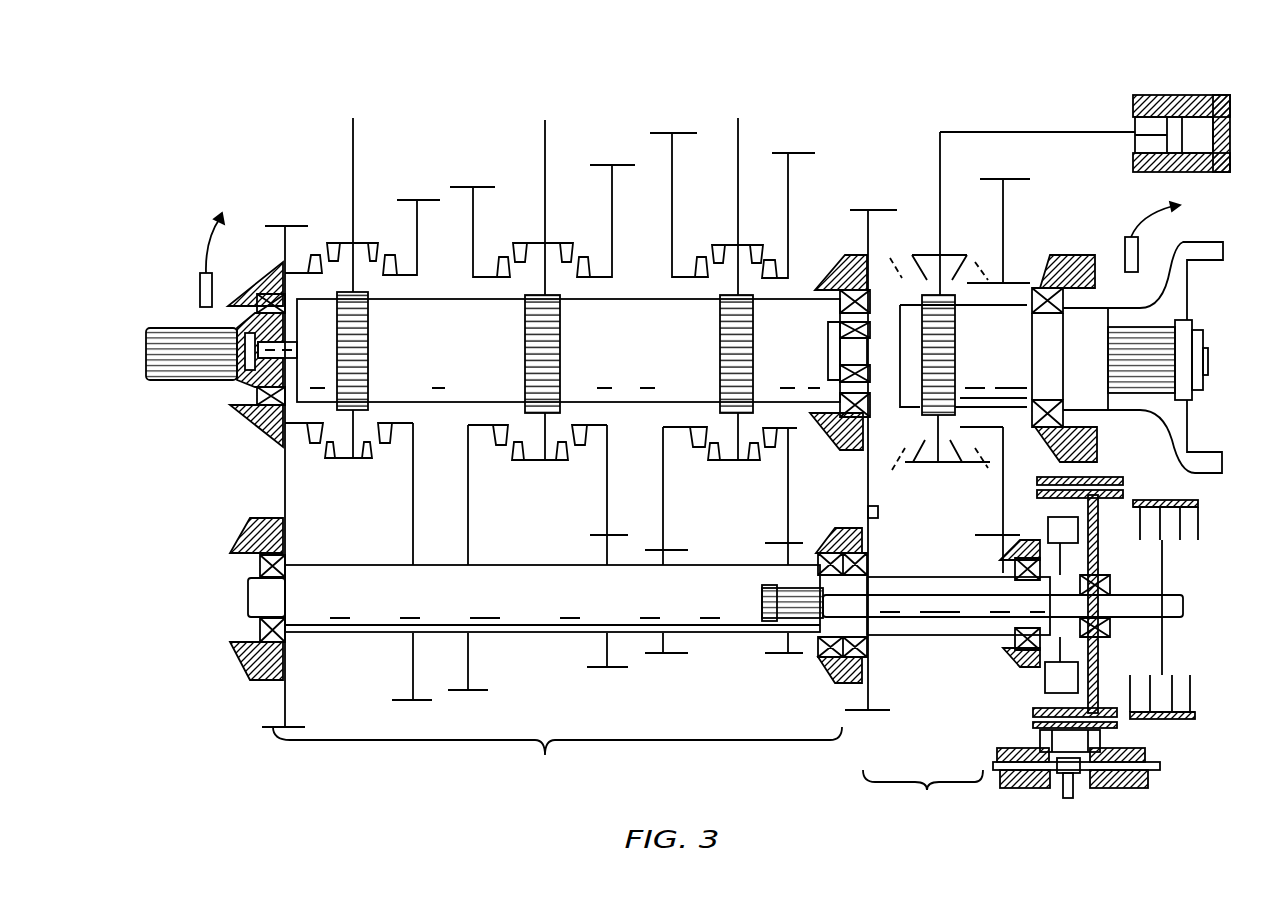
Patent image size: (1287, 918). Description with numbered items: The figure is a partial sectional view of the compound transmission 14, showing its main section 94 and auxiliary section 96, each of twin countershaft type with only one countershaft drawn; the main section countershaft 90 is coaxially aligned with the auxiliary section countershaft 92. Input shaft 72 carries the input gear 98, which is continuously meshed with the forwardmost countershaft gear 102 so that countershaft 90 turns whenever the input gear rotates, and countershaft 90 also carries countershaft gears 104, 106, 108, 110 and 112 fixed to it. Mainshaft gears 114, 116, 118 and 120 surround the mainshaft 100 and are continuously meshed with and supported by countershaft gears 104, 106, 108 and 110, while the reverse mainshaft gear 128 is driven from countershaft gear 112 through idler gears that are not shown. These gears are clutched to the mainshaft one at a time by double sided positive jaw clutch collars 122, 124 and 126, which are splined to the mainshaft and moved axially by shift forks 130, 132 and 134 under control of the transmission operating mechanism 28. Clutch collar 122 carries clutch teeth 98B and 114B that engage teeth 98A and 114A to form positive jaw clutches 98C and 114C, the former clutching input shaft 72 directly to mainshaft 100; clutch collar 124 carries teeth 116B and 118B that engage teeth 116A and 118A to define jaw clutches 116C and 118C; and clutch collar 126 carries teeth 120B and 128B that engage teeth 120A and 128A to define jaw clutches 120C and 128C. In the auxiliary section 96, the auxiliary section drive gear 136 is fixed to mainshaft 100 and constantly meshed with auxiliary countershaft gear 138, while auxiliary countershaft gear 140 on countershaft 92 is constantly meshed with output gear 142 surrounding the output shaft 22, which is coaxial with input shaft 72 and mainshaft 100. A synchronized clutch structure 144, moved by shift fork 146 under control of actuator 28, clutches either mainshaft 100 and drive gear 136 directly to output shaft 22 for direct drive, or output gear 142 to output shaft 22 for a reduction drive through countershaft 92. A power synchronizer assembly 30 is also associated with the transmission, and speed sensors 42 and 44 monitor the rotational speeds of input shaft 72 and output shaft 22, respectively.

The compound transmission 14 is at (712, 86).
The output shaft 22 is at (963, 355).
The transmission operating mechanism 28 is at (1202, 92).
The power synchronizer assembly 30 is at (1212, 556).
The transmission input shaft speed sensor 42 is at (213, 292).
The transmission output shaft speed sensor 44 is at (1178, 208).
The input shaft 72 is at (146, 366).
The main section countershaft 90 is at (565, 578).
The auxiliary section countershaft 92 is at (902, 576).
The main section 94 is at (557, 758).
The auxiliary transmission section 96 is at (923, 796).
The input gear 98 is at (283, 448).
The clutch teeth 98A is at (311, 445).
The positive jaw clutch teeth 98B is at (340, 240).
The positive jaw clutch 98C is at (318, 243).
The mainshaft 100 is at (568, 350).
The countershaft gear 102 is at (285, 702).
The countershaft gear 104 is at (413, 652).
The countershaft gear 106 is at (468, 650).
The countershaft gear 108 is at (607, 650).
The countershaft gear 110 is at (663, 558).
The countershaft gear 112 is at (785, 645).
The mainshaft gear 114 is at (418, 256).
The clutch teeth 114A is at (393, 440).
The positive jaw clutch teeth 114B is at (366, 455).
The positive jaw clutch 114C is at (374, 283).
The mainshaft gear 116 is at (467, 462).
The jaw clutch teeth 116A is at (500, 425).
The positive jaw clutch teeth 116B is at (517, 458).
The positive jaw clutch 116C is at (505, 450).
The mainshaft gear 118 is at (614, 248).
The jaw clutch teeth 118A is at (583, 432).
The positive jaw clutch teeth 118B is at (565, 450).
The positive jaw clutch 118C is at (562, 235).
The mainshaft gear 120 is at (662, 250).
The jaw clutch teeth 120A is at (697, 430).
The jaw clutch teeth 120B is at (710, 455).
The positive jaw clutch 120C is at (717, 275).
The double sided positive jaw clutch collar 122 is at (372, 238).
The double sided positive jaw clutch collar 124 is at (520, 230).
The double sided positive jaw clutch collar 126 is at (722, 235).
The reverse mainshaft gear 128 is at (792, 200).
The jaw clutch teeth 128A is at (771, 283).
The jaw clutch teeth 128B is at (752, 465).
The positive jaw clutch 128C is at (754, 430).
The shift fork 130 is at (356, 158).
The shift fork 132 is at (547, 158).
The shift fork 134 is at (740, 150).
The auxiliary section drive gear 136 is at (871, 222).
The auxiliary section countershaft gear 138 is at (878, 512).
The auxiliary section countershaft gear 140 is at (1000, 650).
The output gear 142 is at (1004, 232).
The synchronized clutch structure 144 is at (955, 248).
The shift fork 146 is at (943, 150).